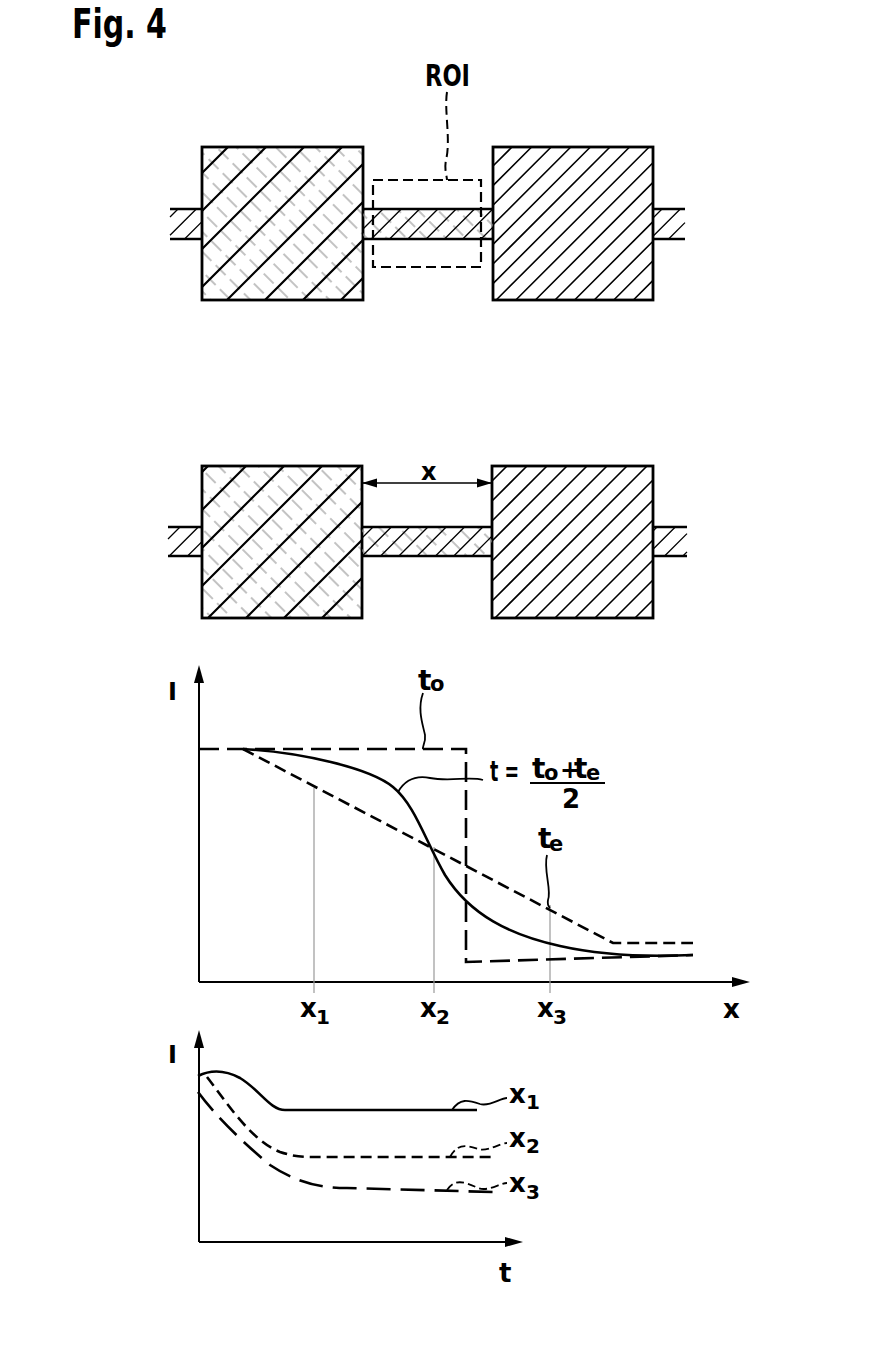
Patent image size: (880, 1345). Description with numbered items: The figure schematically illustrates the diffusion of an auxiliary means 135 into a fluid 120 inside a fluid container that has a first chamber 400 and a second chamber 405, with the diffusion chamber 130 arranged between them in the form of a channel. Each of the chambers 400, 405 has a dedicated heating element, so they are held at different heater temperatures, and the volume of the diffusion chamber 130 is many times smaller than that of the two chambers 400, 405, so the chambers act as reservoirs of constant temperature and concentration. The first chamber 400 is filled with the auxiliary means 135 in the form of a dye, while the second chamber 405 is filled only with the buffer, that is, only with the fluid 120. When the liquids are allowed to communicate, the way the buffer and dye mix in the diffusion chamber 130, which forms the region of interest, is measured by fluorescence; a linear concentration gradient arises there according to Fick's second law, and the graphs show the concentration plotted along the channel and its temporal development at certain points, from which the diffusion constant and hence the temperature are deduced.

The first chamber 400 is at (282, 226).
The second chamber 405 is at (573, 226).
The fluid 120 is at (557, 290).
The auxiliary means 135 is at (267, 290).
The diffusion chamber 130 is at (435, 239).